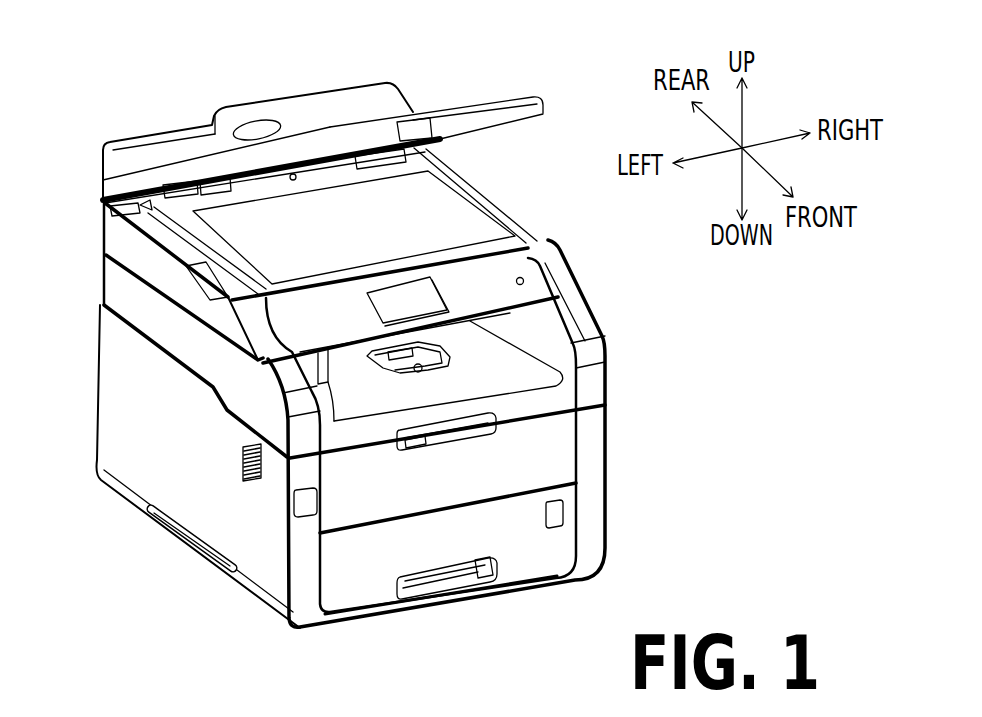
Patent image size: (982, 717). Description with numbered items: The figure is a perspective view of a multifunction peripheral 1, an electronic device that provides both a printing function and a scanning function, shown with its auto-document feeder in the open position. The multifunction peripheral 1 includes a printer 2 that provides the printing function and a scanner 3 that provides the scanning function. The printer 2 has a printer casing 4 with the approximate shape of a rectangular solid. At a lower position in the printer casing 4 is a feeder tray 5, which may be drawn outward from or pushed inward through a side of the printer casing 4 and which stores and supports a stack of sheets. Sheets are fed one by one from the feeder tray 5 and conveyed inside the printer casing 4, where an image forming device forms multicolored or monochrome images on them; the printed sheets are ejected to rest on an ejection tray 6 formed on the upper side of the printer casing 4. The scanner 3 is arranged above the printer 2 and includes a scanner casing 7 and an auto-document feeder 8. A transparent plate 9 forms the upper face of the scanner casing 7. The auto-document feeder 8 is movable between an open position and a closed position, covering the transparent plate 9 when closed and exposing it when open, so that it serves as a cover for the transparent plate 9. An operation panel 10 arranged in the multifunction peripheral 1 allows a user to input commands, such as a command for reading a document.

The multifunction peripheral 1 is at (378, 663).
The printer 2 is at (618, 456).
The scanner 3 is at (428, 100).
The printer casing 4 is at (186, 507).
The feeder tray 5 is at (540, 570).
The ejection tray 6 is at (508, 352).
The scanner casing 7 is at (110, 229).
The auto-document feeder 8 is at (267, 107).
The transparent plate 9 is at (455, 203).
The operation panel 10 is at (485, 277).